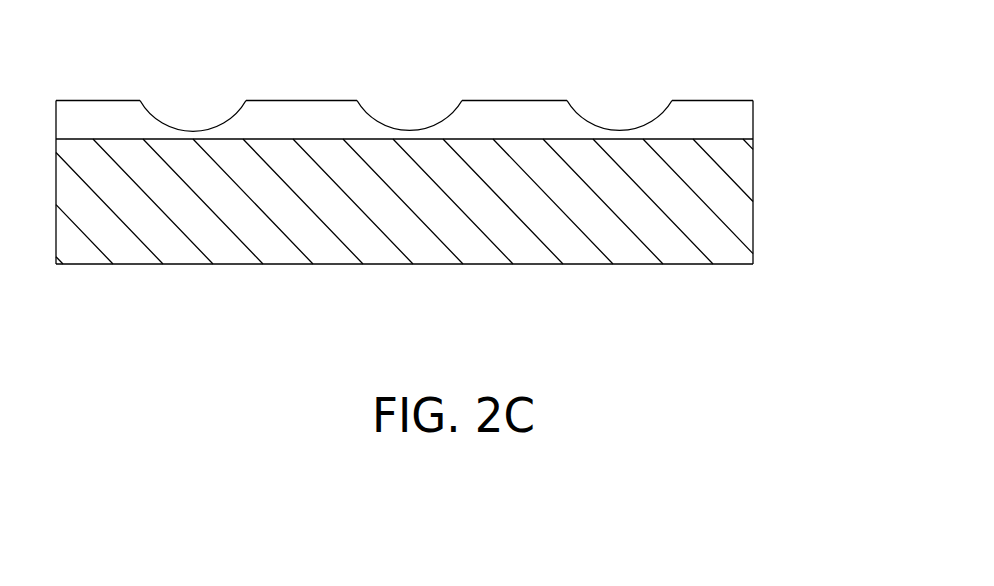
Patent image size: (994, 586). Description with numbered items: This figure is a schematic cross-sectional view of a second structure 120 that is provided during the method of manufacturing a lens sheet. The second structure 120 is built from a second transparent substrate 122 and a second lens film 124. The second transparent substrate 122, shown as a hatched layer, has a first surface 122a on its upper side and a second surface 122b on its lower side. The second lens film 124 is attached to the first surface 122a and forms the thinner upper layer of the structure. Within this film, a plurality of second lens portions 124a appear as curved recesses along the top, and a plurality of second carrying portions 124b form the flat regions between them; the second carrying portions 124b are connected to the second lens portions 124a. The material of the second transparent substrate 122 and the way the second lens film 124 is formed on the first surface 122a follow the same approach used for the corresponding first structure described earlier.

The second structure 120 is at (459, 189).
The second transparent substrate 122 is at (455, 201).
The first surface 122a is at (710, 142).
The second surface 122b is at (698, 262).
The second lens film 124 is at (449, 83).
The second lens portions 124a is at (408, 132).
The second carrying portions 124b is at (515, 110).